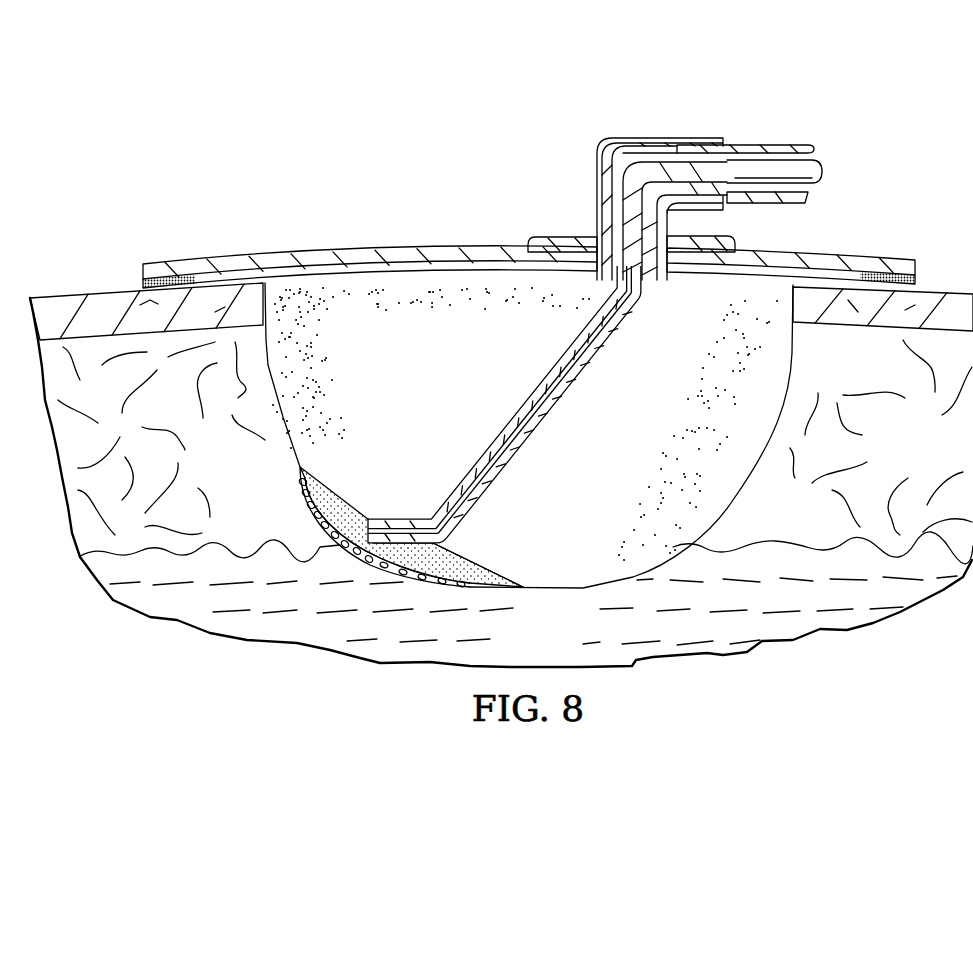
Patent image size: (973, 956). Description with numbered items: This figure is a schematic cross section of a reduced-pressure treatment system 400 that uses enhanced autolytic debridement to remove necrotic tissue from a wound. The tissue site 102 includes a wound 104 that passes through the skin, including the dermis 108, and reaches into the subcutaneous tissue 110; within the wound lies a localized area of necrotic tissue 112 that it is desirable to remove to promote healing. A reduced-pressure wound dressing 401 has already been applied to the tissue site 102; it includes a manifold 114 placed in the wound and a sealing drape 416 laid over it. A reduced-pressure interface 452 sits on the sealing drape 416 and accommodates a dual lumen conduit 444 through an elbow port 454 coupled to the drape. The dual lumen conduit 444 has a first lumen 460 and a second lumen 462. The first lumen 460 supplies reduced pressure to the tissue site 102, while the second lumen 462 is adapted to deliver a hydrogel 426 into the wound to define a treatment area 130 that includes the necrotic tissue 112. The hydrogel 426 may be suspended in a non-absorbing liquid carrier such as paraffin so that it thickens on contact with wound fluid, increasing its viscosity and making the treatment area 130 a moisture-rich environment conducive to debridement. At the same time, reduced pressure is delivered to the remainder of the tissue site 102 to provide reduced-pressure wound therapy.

The system 400 is at (340, 103).
The reduced-pressure wound dressing 401 is at (396, 247).
The reduced-pressure interface 452 is at (556, 236).
The elbow port 454 is at (610, 135).
The dual lumen conduit 444 is at (752, 140).
The first lumen 460 is at (822, 152).
The sealing drape 416 is at (860, 258).
The manifold 114 is at (410, 397).
The wound 104 is at (807, 353).
The dermis 108 is at (886, 451).
The second lumen 462 is at (528, 443).
The treatment area 130 is at (294, 481).
The necrotic tissue 112 is at (305, 508).
The hydrogel 426 is at (473, 577).
The tissue site 102 is at (752, 496).
The subcutaneous tissue 110 is at (505, 639).